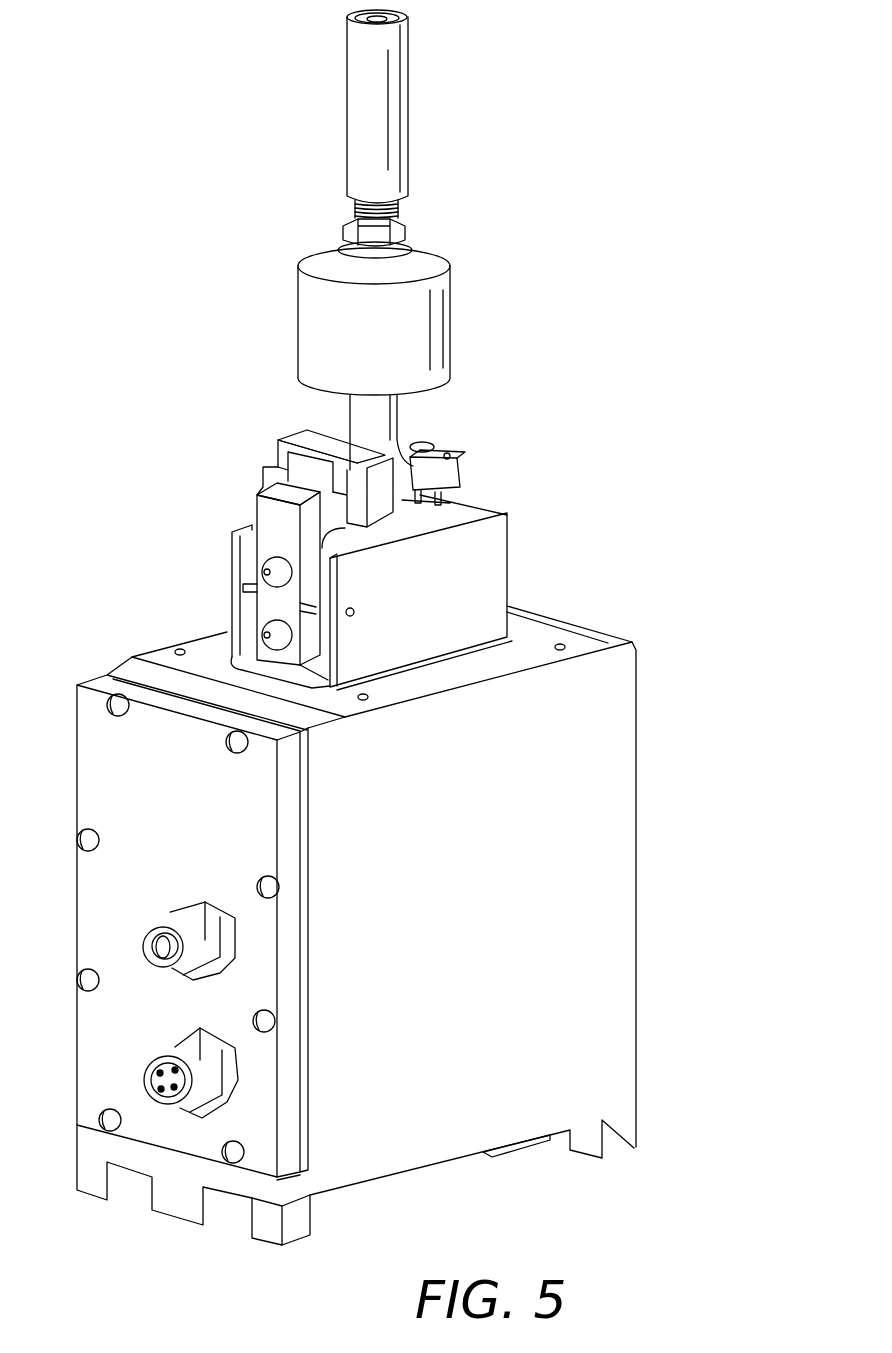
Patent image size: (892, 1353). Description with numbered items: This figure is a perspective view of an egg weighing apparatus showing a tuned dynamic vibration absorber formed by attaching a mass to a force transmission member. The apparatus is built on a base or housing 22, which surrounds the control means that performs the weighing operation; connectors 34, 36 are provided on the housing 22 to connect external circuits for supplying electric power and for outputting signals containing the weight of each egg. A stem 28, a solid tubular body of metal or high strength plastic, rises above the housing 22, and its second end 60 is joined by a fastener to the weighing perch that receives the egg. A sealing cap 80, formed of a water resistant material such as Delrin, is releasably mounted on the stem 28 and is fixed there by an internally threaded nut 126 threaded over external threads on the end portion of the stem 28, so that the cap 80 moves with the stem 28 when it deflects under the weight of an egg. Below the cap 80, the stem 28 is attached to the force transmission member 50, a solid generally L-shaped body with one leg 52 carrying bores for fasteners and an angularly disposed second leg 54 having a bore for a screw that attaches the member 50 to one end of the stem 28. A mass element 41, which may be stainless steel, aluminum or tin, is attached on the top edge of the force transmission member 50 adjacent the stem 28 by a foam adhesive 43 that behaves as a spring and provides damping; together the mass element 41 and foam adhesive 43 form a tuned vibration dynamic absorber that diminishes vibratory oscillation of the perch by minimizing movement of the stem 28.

The housing 22 is at (638, 660).
The stem 28 is at (398, 209).
The connector 34 is at (175, 1056).
The connector 36 is at (165, 924).
The mass element 41 is at (300, 468).
The foam adhesive 43 is at (278, 448).
The force transmission member 50 is at (266, 512).
The leg 52 is at (313, 577).
The second leg 54 is at (462, 468).
The second end 60 is at (400, 105).
The sealing cap 80 is at (447, 313).
The nut 126 is at (407, 235).